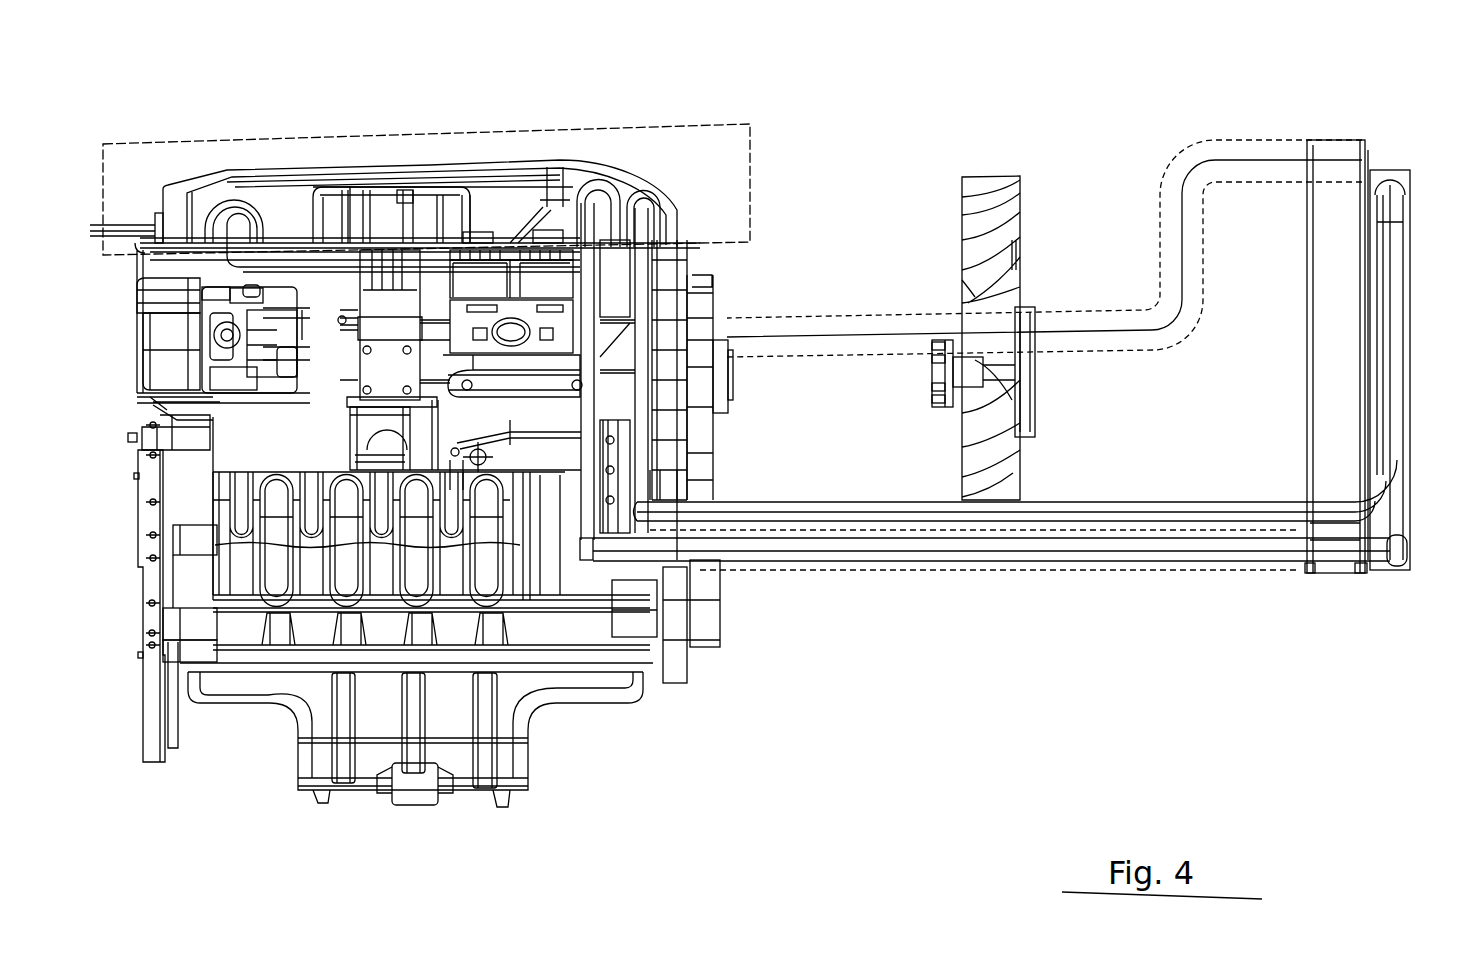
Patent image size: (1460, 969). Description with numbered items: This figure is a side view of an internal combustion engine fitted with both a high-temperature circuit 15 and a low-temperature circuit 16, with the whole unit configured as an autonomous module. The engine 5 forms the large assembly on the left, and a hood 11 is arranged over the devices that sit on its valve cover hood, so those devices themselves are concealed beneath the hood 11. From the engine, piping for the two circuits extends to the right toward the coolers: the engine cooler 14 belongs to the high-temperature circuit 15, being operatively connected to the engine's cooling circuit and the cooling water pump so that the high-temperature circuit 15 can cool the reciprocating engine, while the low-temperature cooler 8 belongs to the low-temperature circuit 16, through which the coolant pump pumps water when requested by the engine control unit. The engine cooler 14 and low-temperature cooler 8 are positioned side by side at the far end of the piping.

The engine 5 is at (387, 243).
The low-temperature cooler 8 is at (1407, 170).
The hood 11 is at (295, 195).
The engine cooler 14 is at (1335, 203).
The high-temperature circuit 15 is at (1179, 522).
The low-temperature circuit 16 is at (816, 522).